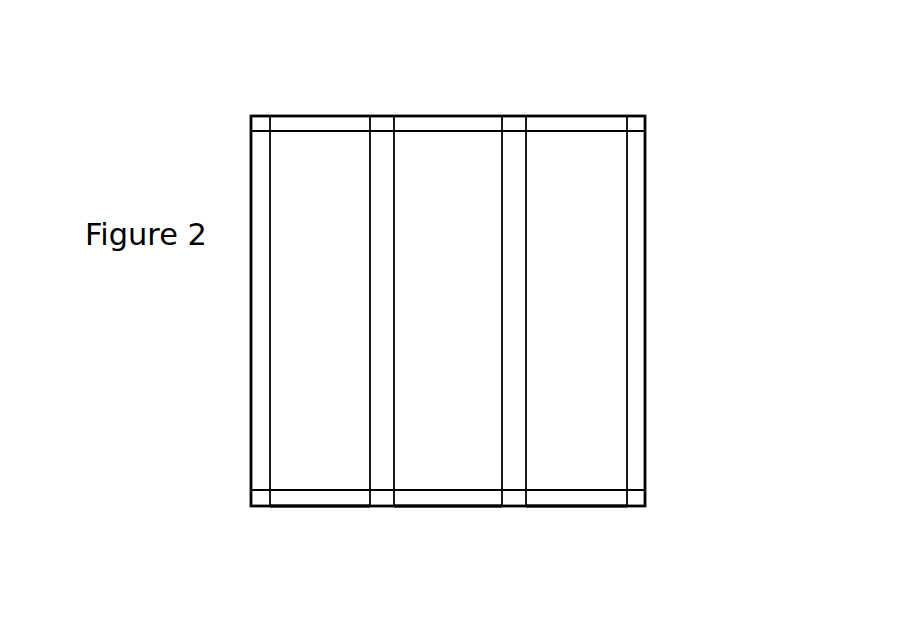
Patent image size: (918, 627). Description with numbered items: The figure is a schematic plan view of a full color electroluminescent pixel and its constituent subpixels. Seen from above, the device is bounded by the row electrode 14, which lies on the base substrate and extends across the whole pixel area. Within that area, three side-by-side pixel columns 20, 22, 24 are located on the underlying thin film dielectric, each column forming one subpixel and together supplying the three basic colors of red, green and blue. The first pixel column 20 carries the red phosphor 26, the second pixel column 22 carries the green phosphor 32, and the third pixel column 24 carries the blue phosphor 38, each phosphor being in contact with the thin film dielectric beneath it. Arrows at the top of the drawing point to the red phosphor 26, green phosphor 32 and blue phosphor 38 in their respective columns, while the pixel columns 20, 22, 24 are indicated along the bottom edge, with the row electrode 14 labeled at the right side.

The row electrode 14 is at (637, 230).
The pixel column 20 is at (323, 498).
The pixel column 22 is at (453, 500).
The pixel column 24 is at (573, 500).
The red phosphor 26 is at (311, 92).
The green phosphor 32 is at (442, 92).
The blue phosphor 38 is at (561, 92).